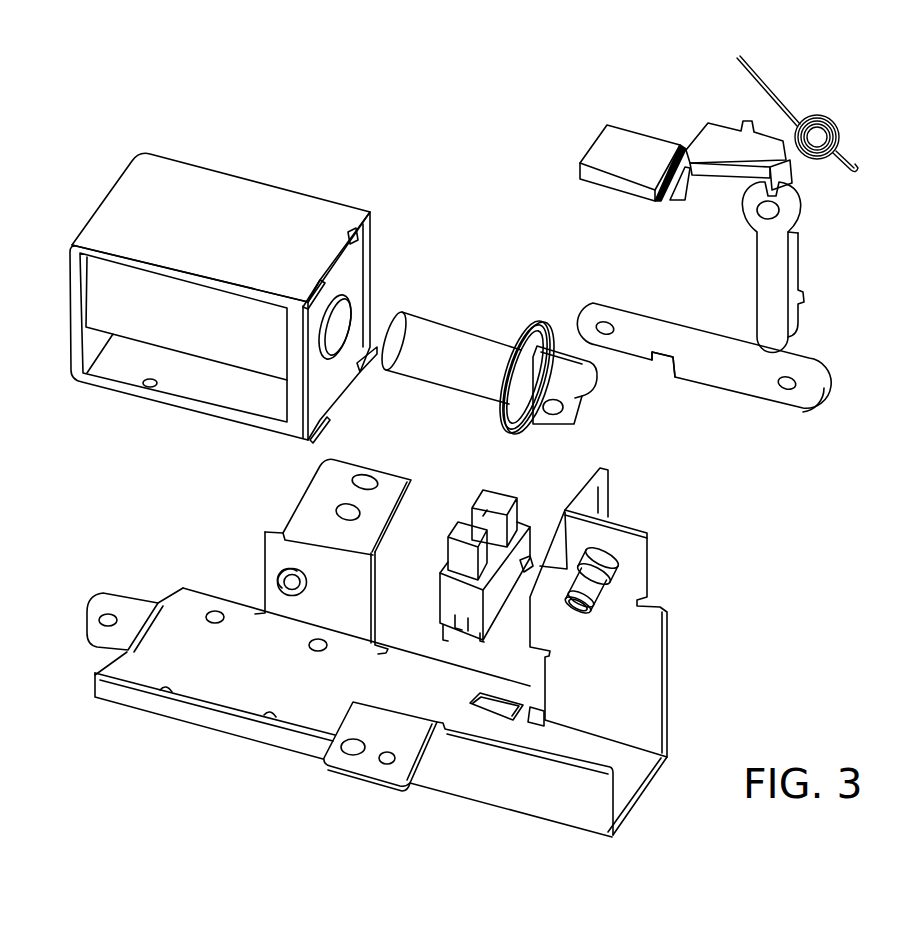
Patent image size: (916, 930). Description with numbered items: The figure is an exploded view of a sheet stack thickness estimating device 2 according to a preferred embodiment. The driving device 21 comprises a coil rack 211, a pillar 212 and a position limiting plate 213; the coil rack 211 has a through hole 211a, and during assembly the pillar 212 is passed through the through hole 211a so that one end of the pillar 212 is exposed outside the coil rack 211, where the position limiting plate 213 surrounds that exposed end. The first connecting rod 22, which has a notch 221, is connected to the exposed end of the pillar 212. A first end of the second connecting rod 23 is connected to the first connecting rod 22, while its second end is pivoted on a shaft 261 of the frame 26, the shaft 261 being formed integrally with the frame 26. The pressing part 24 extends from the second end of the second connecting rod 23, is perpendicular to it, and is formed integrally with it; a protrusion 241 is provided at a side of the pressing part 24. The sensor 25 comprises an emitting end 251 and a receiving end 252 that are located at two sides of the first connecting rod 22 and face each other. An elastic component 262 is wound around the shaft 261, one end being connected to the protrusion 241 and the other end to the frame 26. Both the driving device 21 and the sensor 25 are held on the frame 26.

The sheet stack thickness estimating device 2 is at (54, 106).
The driving device 21 is at (215, 160).
The coil rack 211 is at (272, 200).
The through hole 211a is at (342, 312).
The pillar 212 is at (452, 373).
The position limiting plate 213 is at (537, 323).
The first connecting rod 22 is at (737, 377).
The notch 221 is at (665, 362).
The second connecting rod 23 is at (765, 277).
The pressing part 24 is at (603, 153).
The protrusion 241 is at (740, 120).
The sensor 25 is at (507, 490).
The emitting end 251 is at (472, 530).
The receiving end 252 is at (472, 507).
The frame 26 is at (237, 690).
The shaft 261 is at (592, 580).
The elastic component 262 is at (827, 117).